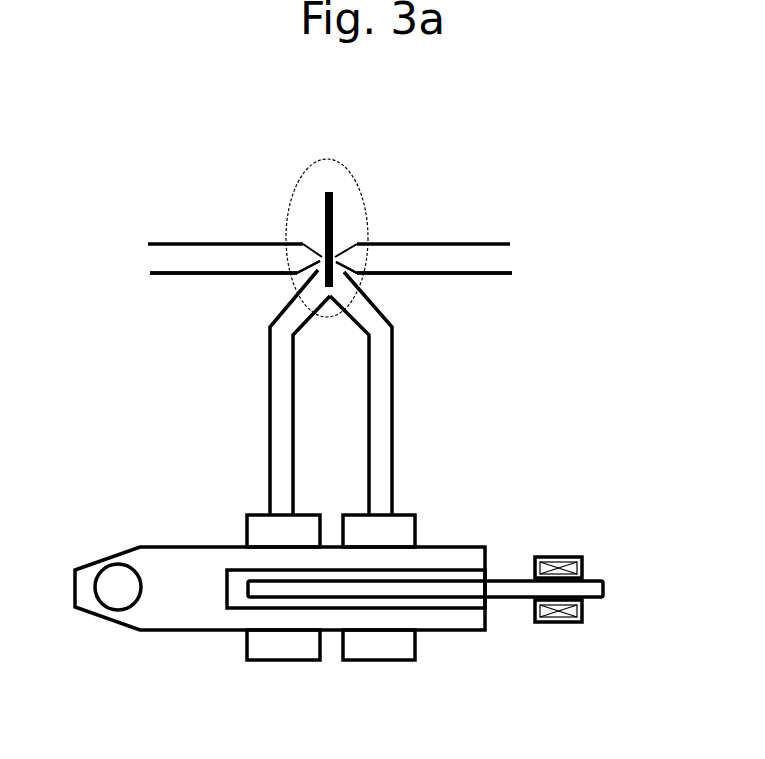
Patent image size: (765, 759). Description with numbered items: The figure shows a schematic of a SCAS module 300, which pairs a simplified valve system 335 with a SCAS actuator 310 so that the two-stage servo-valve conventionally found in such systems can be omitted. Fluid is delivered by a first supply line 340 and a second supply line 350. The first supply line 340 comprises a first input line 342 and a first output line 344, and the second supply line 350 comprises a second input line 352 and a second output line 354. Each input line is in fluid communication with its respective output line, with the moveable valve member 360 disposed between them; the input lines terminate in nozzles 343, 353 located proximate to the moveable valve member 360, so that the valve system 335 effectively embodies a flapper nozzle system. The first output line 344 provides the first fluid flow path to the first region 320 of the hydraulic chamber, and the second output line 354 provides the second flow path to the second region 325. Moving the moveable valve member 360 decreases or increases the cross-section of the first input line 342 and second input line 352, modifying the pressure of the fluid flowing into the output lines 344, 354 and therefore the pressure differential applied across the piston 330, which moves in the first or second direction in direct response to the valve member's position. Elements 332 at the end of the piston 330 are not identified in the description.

The SCAS module 300 is at (583, 130).
The SCAS actuator 310 is at (588, 503).
The first region of the hydraulic chamber 320 is at (273, 537).
The second region of the hydraulic chamber 325 is at (387, 532).
The piston 330 is at (520, 588).
The magnets 332 is at (582, 622).
The valve system 335 is at (293, 173).
The first supply line 340 is at (232, 205).
The first input line 342 is at (243, 260).
The nozzle 343 is at (310, 262).
The first output line 344 is at (282, 442).
The second supply line 350 is at (423, 213).
The second input line 352 is at (452, 262).
The nozzle 353 is at (337, 260).
The second output line 354 is at (382, 410).
The moveable valve member 360 is at (331, 190).